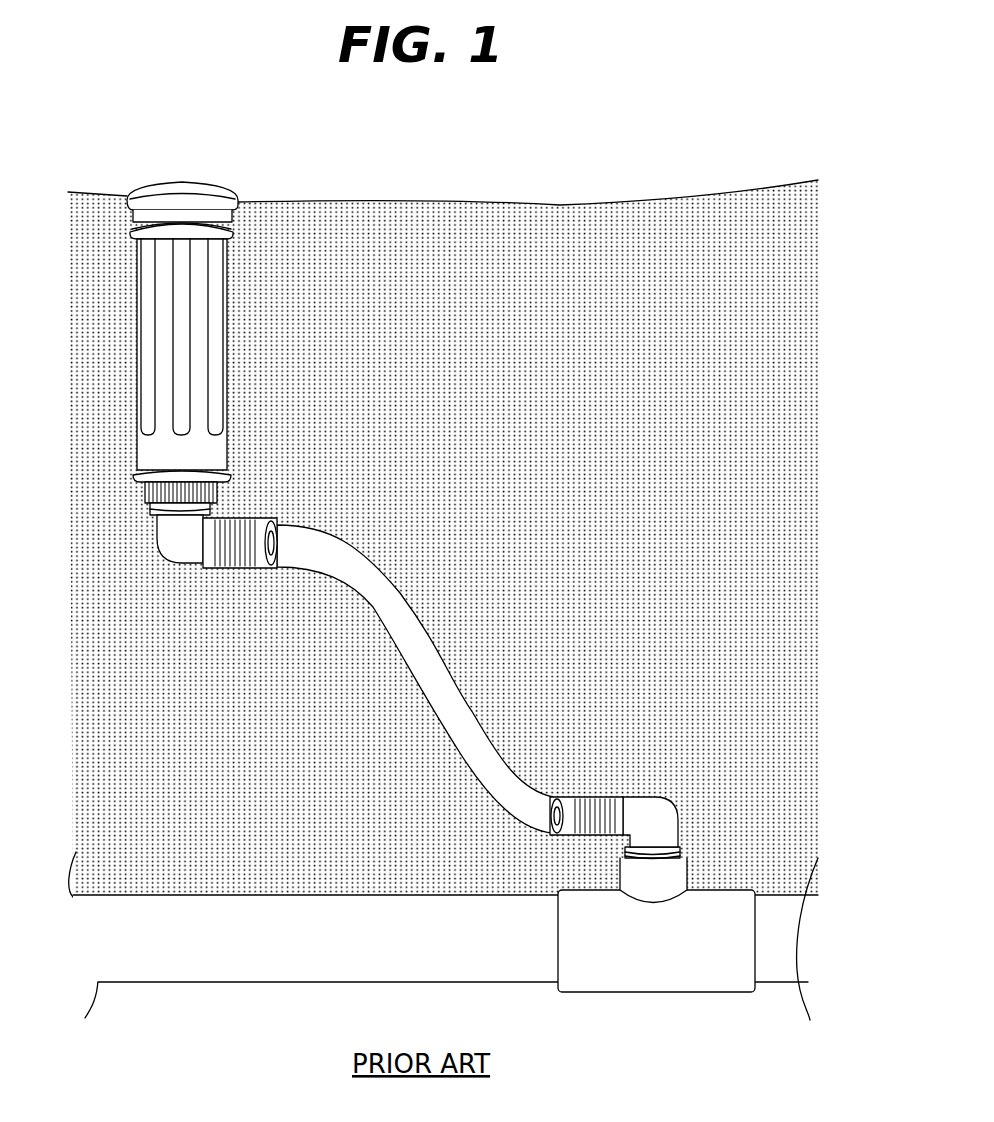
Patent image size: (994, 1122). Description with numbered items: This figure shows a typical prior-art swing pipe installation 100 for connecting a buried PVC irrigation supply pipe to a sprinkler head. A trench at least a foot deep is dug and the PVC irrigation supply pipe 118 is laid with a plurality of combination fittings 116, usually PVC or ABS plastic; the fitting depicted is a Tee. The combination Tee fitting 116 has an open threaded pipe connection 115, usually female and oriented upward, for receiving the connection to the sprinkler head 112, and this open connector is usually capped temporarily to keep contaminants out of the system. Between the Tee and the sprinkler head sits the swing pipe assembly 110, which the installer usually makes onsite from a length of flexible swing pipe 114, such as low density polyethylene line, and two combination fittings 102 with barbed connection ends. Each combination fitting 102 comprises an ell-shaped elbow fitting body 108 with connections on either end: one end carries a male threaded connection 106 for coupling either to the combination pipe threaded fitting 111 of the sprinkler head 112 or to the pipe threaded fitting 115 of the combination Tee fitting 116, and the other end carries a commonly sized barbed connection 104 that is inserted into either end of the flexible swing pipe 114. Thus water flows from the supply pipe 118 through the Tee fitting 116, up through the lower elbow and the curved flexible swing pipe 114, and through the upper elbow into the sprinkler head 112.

The irrigation system installation / soil 100 is at (500, 218).
The combination fitting 102 is at (158, 586).
The barbed connection 104 is at (255, 521).
The male threaded connection 106 is at (155, 514).
The elbow fitting body 108 is at (157, 553).
The swing pipe assembly 110 is at (478, 552).
The combination pipe threaded fitting 111 is at (213, 509).
The sprinkler head 112 is at (213, 352).
The flexible swing pipe 114 is at (410, 621).
The threaded pipe connection 115 is at (680, 846).
The combination Tee fitting 116 is at (650, 970).
The PVC irrigation supply pipe 118 is at (303, 908).